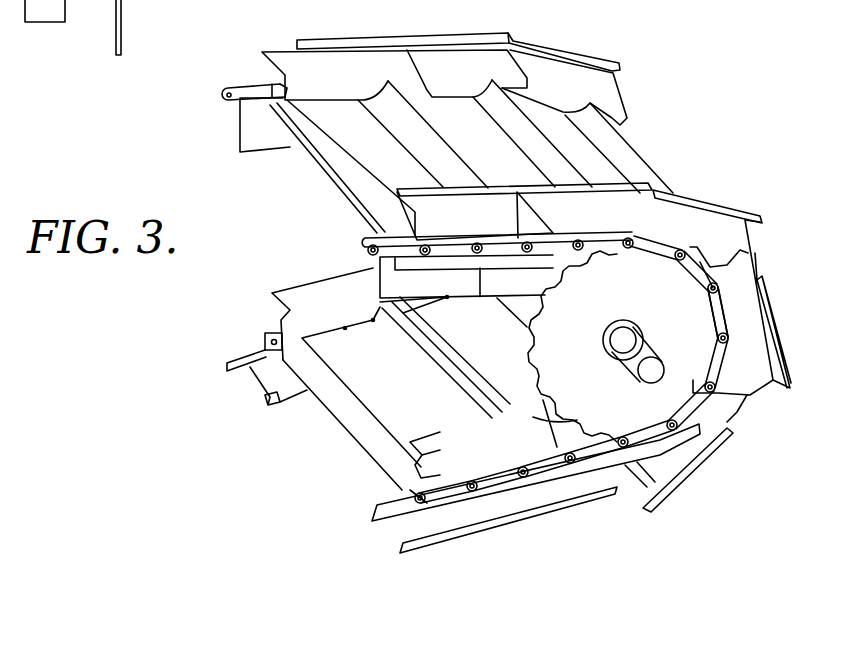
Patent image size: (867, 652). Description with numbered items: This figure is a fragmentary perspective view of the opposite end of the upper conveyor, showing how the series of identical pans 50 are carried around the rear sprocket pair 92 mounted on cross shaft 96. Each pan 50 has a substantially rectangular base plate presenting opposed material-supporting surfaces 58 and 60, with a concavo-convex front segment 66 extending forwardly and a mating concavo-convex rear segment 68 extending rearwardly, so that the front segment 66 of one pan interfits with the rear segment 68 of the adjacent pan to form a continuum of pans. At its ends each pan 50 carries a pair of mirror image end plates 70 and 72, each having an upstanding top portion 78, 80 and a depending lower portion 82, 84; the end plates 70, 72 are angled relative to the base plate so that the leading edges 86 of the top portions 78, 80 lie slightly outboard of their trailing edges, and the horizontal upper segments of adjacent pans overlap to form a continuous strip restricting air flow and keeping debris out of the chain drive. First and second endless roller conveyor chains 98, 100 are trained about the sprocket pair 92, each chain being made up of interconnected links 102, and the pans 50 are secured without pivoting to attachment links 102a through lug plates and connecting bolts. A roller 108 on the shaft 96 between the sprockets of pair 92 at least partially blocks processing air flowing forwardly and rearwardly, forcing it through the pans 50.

The pan 50 is at (670, 164).
The material-supporting surface 58 is at (330, 113).
The material-supporting surface 60 is at (361, 387).
The concavo-convex front segment 66 is at (482, 372).
The concavo-convex rear segment 68 is at (418, 124).
The end plate 70 is at (717, 195).
The end plate 72 is at (613, 57).
The upstanding top portion 78 is at (505, 194).
The upstanding top portion 80 is at (327, 60).
The depending lower portion 82 is at (388, 285).
The depending lower portion 84 is at (122, 42).
The leading edge 86 is at (514, 216).
The rear sprocket pair 92 is at (517, 347).
The cross shaft 96 is at (652, 353).
The first endless roller conveyor chain 98 is at (378, 243).
The second endless roller conveyor chain 100 is at (250, 90).
The link 102 is at (647, 432).
The attachment link 102a is at (713, 308).
The roller 108 is at (68, 12).